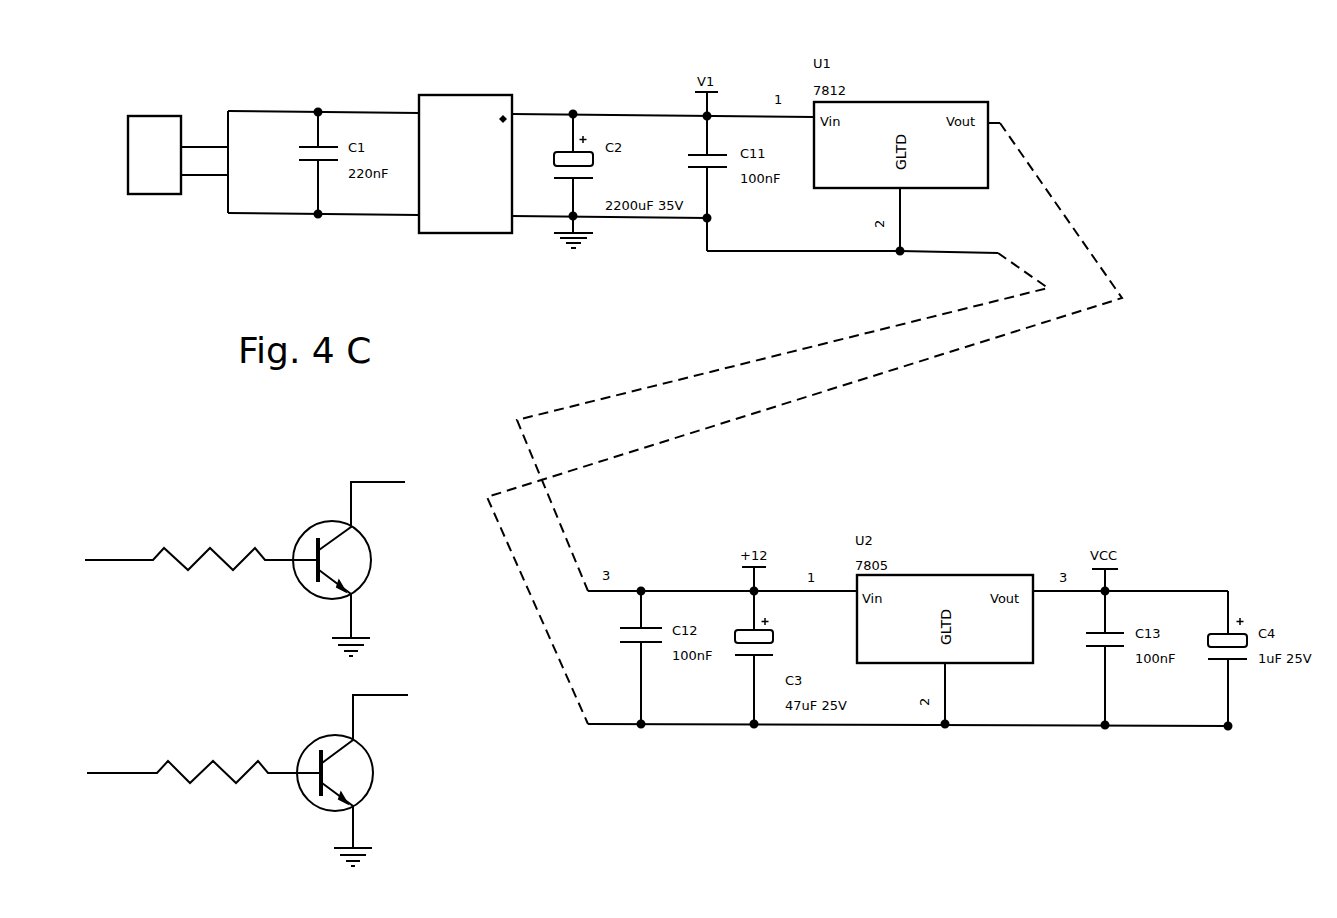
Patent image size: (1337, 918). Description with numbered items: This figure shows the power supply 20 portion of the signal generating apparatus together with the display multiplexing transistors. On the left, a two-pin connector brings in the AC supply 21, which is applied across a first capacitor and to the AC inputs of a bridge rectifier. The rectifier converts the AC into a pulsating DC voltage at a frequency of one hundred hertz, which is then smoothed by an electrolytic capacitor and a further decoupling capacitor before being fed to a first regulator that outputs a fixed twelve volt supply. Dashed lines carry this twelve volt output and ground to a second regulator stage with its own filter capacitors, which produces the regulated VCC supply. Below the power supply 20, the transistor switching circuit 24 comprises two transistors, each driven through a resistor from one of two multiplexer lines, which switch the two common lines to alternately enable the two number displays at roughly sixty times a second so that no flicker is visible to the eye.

The AC supply 21 is at (177, 132).
The power supply 20 is at (465, 148).
The transistor switching circuit 24 is at (252, 663).